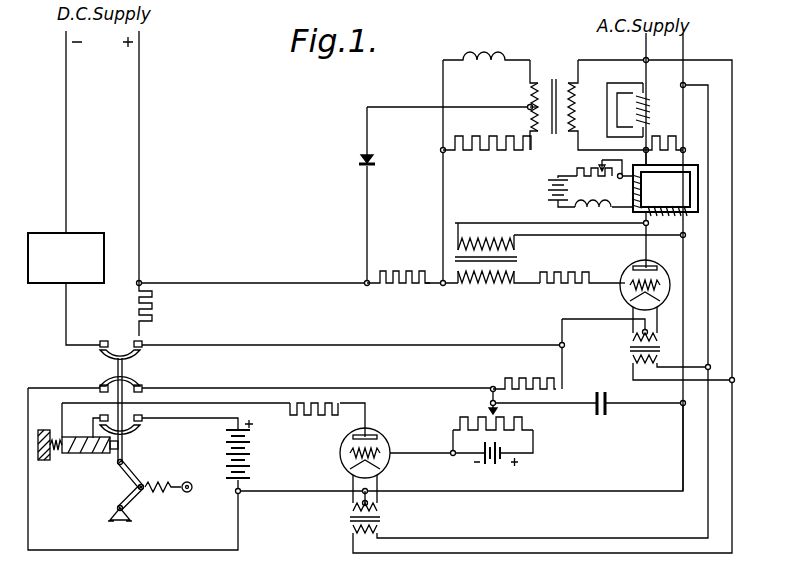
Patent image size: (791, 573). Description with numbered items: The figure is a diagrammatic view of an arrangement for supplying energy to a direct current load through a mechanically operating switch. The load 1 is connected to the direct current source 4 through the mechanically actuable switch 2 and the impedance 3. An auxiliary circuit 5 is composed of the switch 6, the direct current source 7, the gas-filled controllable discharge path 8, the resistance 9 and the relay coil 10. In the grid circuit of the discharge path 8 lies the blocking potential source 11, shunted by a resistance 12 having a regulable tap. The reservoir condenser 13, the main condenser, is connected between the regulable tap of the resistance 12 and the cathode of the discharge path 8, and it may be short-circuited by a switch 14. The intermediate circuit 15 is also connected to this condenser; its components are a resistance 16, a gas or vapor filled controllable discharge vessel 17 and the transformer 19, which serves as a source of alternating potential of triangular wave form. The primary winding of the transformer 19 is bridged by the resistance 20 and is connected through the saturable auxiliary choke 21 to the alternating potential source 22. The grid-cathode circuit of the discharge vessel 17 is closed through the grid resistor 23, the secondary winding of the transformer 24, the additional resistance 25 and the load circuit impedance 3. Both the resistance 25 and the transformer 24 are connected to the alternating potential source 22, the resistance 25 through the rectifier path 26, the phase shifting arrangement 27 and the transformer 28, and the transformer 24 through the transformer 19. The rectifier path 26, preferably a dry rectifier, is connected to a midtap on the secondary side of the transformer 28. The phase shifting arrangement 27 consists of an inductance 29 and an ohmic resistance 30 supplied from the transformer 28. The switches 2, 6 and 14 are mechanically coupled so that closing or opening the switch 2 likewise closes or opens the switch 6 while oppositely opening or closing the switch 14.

The load 1 is at (91, 232).
The mechanically actuable switch 2 is at (142, 358).
The impedance 3 is at (137, 312).
The direct current source 4 is at (66, 52).
The auxiliary circuit 5 is at (281, 458).
The switch 6 is at (140, 431).
The direct current source 7 is at (225, 447).
The gas-filled controllable discharge path 8 is at (386, 441).
The resistance 9 is at (323, 413).
The relay coil 10 is at (79, 456).
The blocking potential source 11 is at (489, 468).
The resistance with regulable tap 12 is at (525, 426).
The reservoir condenser 13 is at (614, 410).
The switch 14 is at (108, 380).
The intermediate circuit 15 is at (630, 261).
The resistance 16 is at (522, 380).
The gas or vapor filled controllable discharge vessel 17 is at (622, 296).
The transformer 19 is at (690, 191).
The resistance 20 is at (655, 142).
The saturable auxiliary choke 21 is at (644, 102).
The alternating potential source 22 is at (646, 46).
The grid resistor 23 is at (572, 270).
The transformer 24 is at (518, 270).
The additional resistance 25 is at (418, 287).
The rectifier path 26 is at (373, 164).
The phase shifting arrangement 27 is at (520, 98).
The transformer 28 is at (554, 136).
The inductance 29 is at (507, 50).
The ohmic resistance 30 is at (482, 153).